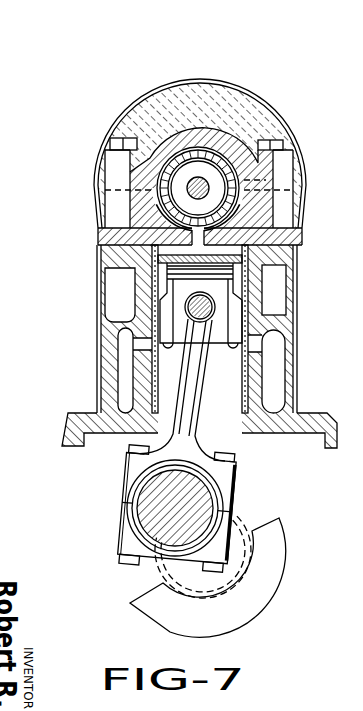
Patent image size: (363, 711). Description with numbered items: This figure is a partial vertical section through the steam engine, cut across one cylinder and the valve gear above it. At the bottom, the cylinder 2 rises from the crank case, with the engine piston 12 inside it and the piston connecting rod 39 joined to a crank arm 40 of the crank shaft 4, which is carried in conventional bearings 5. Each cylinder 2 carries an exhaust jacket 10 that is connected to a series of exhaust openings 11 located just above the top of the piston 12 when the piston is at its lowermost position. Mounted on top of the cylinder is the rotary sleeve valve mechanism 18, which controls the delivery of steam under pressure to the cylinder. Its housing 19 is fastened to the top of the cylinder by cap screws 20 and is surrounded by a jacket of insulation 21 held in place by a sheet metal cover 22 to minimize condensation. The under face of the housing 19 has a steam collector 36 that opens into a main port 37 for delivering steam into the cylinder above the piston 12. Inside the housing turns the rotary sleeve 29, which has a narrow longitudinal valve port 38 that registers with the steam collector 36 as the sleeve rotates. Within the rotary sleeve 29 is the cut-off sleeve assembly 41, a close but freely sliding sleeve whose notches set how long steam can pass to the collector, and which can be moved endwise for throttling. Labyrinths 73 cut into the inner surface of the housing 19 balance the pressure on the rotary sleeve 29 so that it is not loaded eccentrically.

The cylinders 2 is at (292, 287).
The crank shaft 4 is at (150, 492).
The bearings 5 is at (236, 528).
The exhaust jacket 10 is at (276, 367).
The exhaust openings 11 is at (152, 347).
The engine piston 12 is at (244, 308).
The rotary sleeve valve mechanism 18 is at (227, 81).
The housing 19 is at (180, 125).
The cap screws 20 is at (284, 140).
The jacket of insulation 21 is at (254, 111).
The sheet metal cover 22 is at (280, 122).
The rotary sleeve 29 is at (217, 150).
The steam collector 36 is at (233, 226).
The main port 37 is at (134, 238).
The longitudinal valve port 38 is at (157, 206).
The piston connecting rods 39 is at (200, 430).
The crank arms 40 is at (152, 568).
The cut-off sleeve assembly 41 is at (143, 122).
The labyrinths 73 is at (140, 170).